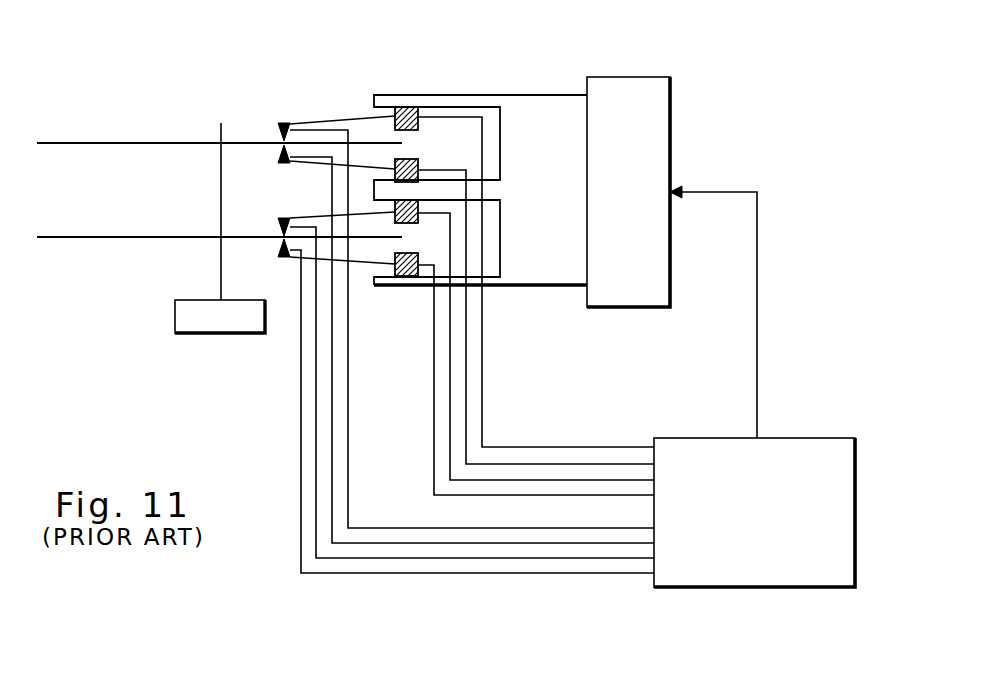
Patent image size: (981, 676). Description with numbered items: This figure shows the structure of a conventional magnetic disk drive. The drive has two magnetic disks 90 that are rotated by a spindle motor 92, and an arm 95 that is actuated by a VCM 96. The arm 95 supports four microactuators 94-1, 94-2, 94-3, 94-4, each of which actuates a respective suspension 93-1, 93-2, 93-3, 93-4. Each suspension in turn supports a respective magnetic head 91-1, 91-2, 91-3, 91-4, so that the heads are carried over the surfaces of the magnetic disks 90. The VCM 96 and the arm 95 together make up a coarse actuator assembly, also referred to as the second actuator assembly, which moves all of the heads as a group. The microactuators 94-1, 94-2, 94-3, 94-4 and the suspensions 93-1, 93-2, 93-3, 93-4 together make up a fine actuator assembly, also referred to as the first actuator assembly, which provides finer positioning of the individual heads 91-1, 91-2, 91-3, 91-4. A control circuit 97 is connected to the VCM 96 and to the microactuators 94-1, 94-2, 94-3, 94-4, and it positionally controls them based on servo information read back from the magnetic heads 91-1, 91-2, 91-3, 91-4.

The magnetic disk 90 is at (177, 142).
The magnetic head 91-1 is at (278, 131).
The magnetic head 91-2 is at (278, 157).
The magnetic head 91-3 is at (278, 225).
The magnetic head 91-4 is at (278, 253).
The spindle motor 92 is at (175, 324).
The suspension 93-1 is at (333, 118).
The suspension 93-2 is at (362, 166).
The suspension 93-3 is at (363, 213).
The suspension 93-4 is at (356, 262).
The microactuator 94-1 is at (435, 83).
The microactuator 94-2 is at (420, 165).
The microactuator 94-3 is at (419, 225).
The microactuator 94-4 is at (420, 262).
The arm 95 is at (557, 95).
The VCM 96 is at (672, 150).
The control circuit 97 is at (790, 437).